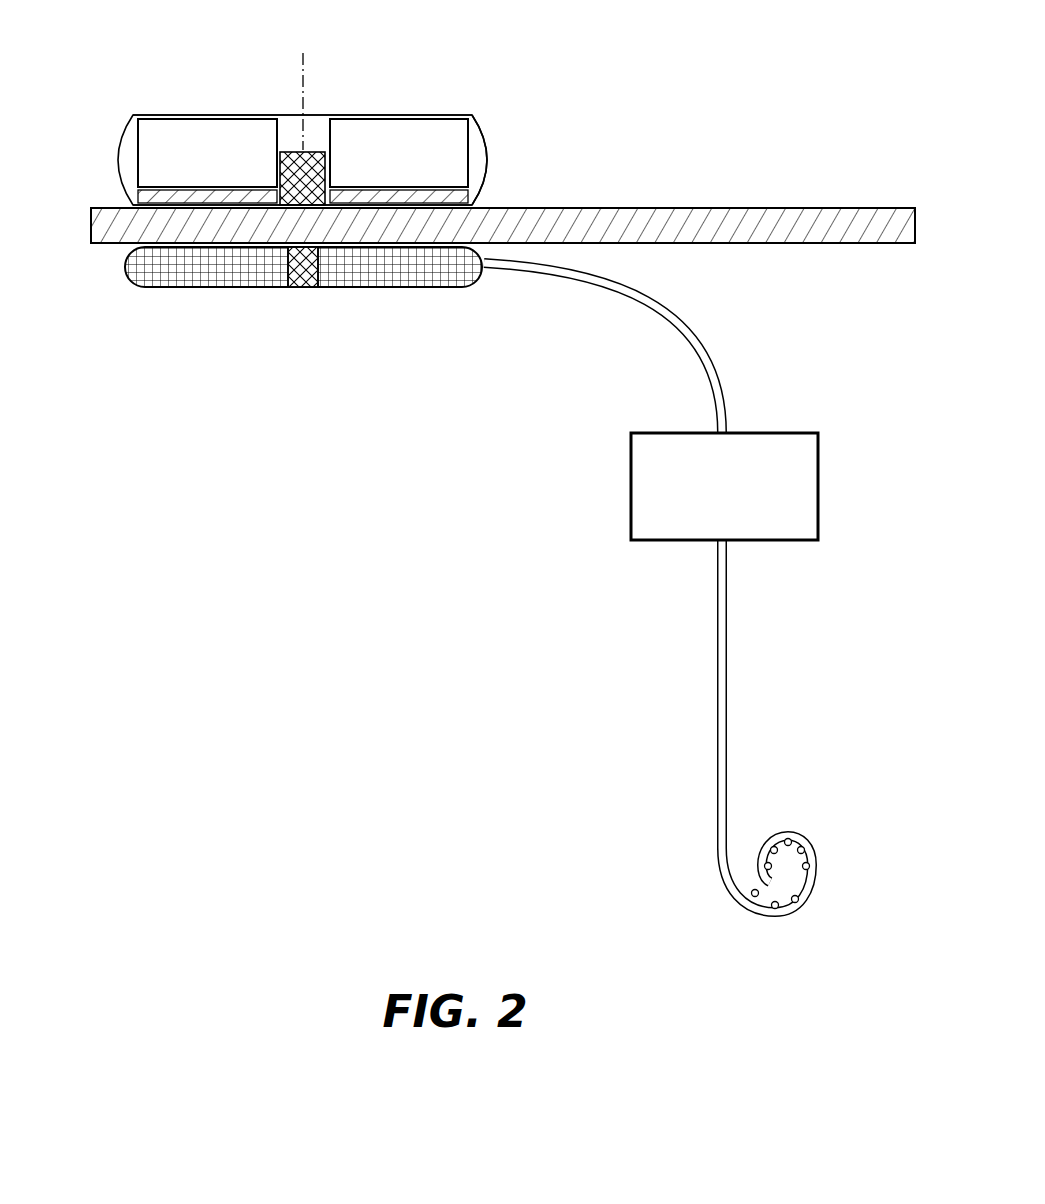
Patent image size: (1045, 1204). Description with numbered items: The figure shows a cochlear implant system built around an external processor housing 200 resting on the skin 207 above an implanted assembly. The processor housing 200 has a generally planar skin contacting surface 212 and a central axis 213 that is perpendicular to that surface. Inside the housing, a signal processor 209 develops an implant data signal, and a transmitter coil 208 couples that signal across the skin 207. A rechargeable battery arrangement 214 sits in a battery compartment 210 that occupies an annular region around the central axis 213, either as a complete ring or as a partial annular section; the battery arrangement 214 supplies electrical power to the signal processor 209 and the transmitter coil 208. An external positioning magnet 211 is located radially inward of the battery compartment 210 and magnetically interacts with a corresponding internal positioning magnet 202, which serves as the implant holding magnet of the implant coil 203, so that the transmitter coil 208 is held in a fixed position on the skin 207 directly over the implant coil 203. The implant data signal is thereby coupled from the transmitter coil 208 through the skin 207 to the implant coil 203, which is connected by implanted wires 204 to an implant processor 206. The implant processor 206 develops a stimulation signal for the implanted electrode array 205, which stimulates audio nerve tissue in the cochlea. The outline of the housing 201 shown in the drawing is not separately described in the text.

The external processor housing 200 is at (412, 54).
The external unit housing 201 is at (131, 130).
The internal positioning magnet 202 is at (305, 288).
The implant coil 203 is at (403, 288).
The implanted wires 204 is at (668, 308).
The implanted electrode array 205 is at (748, 884).
The implant processor 206 is at (724, 486).
The skin 207 is at (731, 207).
The transmitter coil 208 is at (468, 197).
The signal processor 209 is at (480, 134).
The battery compartment 210 is at (445, 115).
The external positioning magnet 211 is at (313, 150).
The skin contacting surface 212 is at (157, 204).
The central axis 213 is at (302, 56).
The rechargeable battery arrangement 214 is at (303, 153).